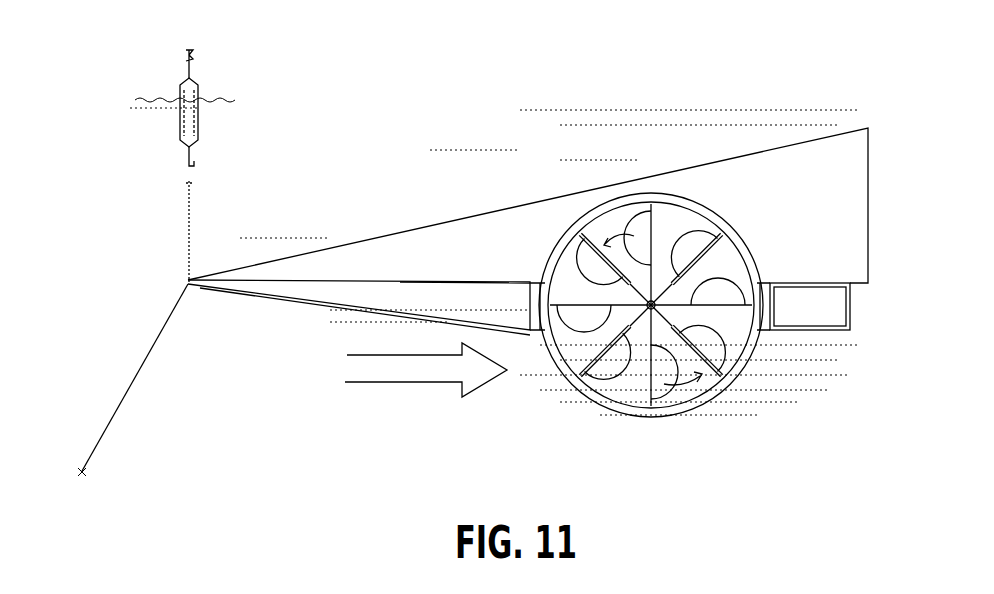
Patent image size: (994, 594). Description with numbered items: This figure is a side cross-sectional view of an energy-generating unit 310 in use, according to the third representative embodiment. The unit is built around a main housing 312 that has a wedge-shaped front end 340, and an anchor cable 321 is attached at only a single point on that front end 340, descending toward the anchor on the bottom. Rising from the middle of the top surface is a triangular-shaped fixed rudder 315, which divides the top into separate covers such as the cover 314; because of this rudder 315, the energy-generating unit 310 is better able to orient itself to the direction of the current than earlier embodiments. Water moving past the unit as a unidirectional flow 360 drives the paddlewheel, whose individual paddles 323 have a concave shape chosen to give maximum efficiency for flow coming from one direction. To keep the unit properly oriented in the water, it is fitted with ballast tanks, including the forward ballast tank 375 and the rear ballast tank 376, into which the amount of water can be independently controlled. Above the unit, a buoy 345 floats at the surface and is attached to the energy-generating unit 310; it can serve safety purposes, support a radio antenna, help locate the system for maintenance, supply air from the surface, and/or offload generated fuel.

The energy-generating unit 310 is at (398, 120).
The main housing 312 is at (810, 332).
The cover 314 is at (745, 245).
The fixed rudder 315 is at (395, 250).
The anchor cable 321 is at (127, 395).
The paddles 323 is at (655, 390).
The wedge-shaped front end 340 is at (296, 318).
The buoy 345 is at (181, 118).
The unidirectional flow 360 is at (406, 373).
The forward ballast tank 375 is at (442, 298).
The rear ballast tank 376 is at (833, 300).